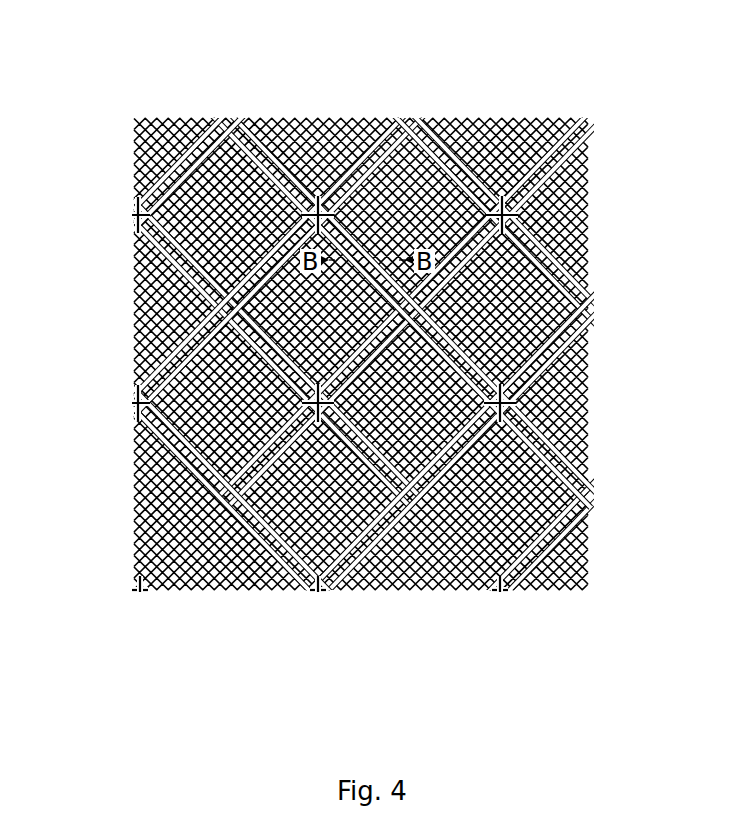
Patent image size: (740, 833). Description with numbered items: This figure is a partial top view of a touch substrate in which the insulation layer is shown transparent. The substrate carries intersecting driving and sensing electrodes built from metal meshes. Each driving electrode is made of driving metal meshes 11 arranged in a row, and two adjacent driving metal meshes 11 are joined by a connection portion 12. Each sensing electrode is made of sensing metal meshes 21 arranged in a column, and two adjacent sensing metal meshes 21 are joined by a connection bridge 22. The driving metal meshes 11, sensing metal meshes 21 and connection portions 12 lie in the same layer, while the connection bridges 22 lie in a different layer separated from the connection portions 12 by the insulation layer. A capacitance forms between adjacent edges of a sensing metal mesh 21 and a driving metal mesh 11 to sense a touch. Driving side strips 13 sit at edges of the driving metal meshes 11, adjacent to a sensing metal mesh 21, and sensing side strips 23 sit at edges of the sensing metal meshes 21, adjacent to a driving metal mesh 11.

The driving metal mesh 11 is at (310, 120).
The connection portion 12 is at (550, 248).
The driving side strip 13 is at (585, 487).
The sensing metal mesh 21 is at (137, 498).
The connection bridge 22 is at (553, 178).
The sensing side strip 23 is at (527, 137).